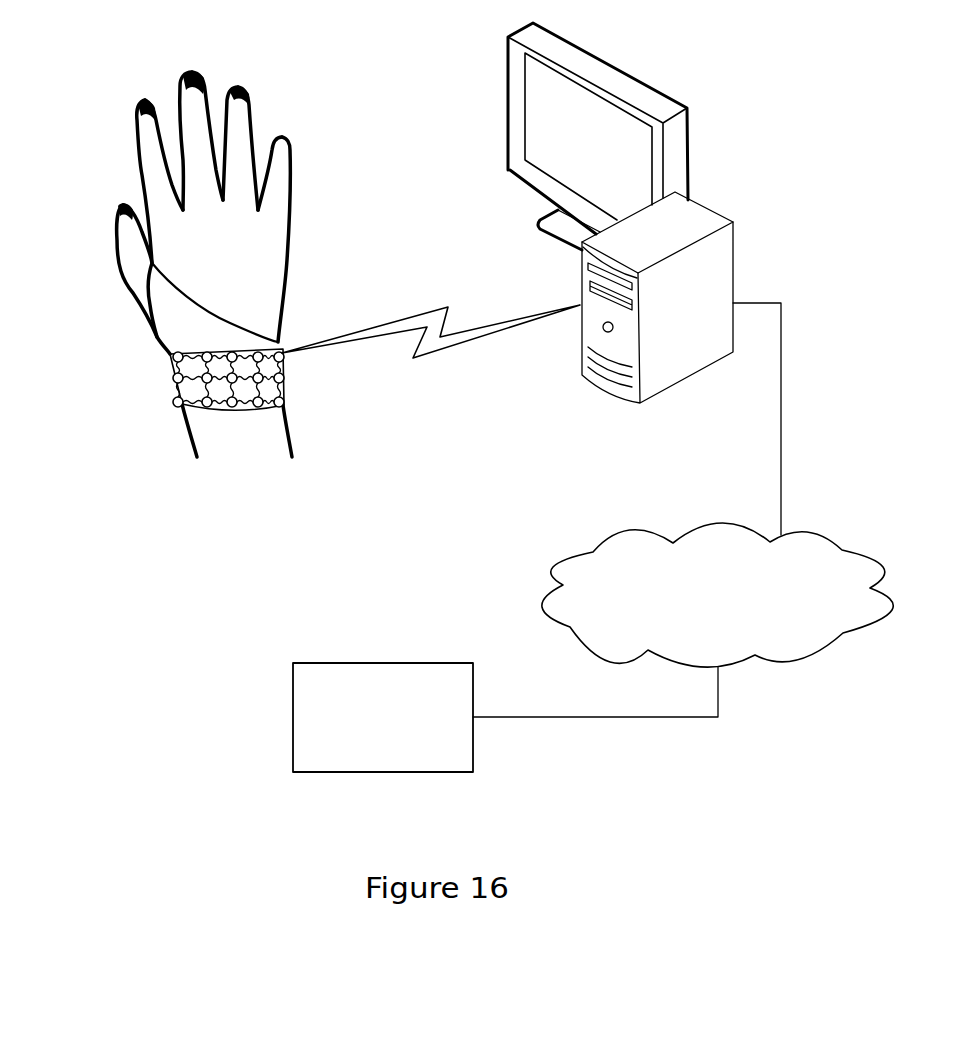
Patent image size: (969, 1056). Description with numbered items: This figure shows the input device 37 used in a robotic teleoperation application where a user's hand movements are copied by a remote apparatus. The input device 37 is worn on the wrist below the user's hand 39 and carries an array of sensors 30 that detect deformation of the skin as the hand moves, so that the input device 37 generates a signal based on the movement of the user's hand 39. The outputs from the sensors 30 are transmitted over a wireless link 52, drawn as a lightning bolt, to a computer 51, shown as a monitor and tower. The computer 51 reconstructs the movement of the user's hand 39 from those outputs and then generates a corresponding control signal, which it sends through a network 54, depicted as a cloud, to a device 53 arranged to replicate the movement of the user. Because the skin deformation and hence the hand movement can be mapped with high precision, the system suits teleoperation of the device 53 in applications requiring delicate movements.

The input device 37 is at (128, 391).
The user's hand 39 is at (268, 253).
The sensors 30 is at (287, 382).
The computer 51 is at (733, 232).
The wireless link 52 is at (484, 337).
The device 53 is at (292, 700).
The network 54 is at (745, 662).